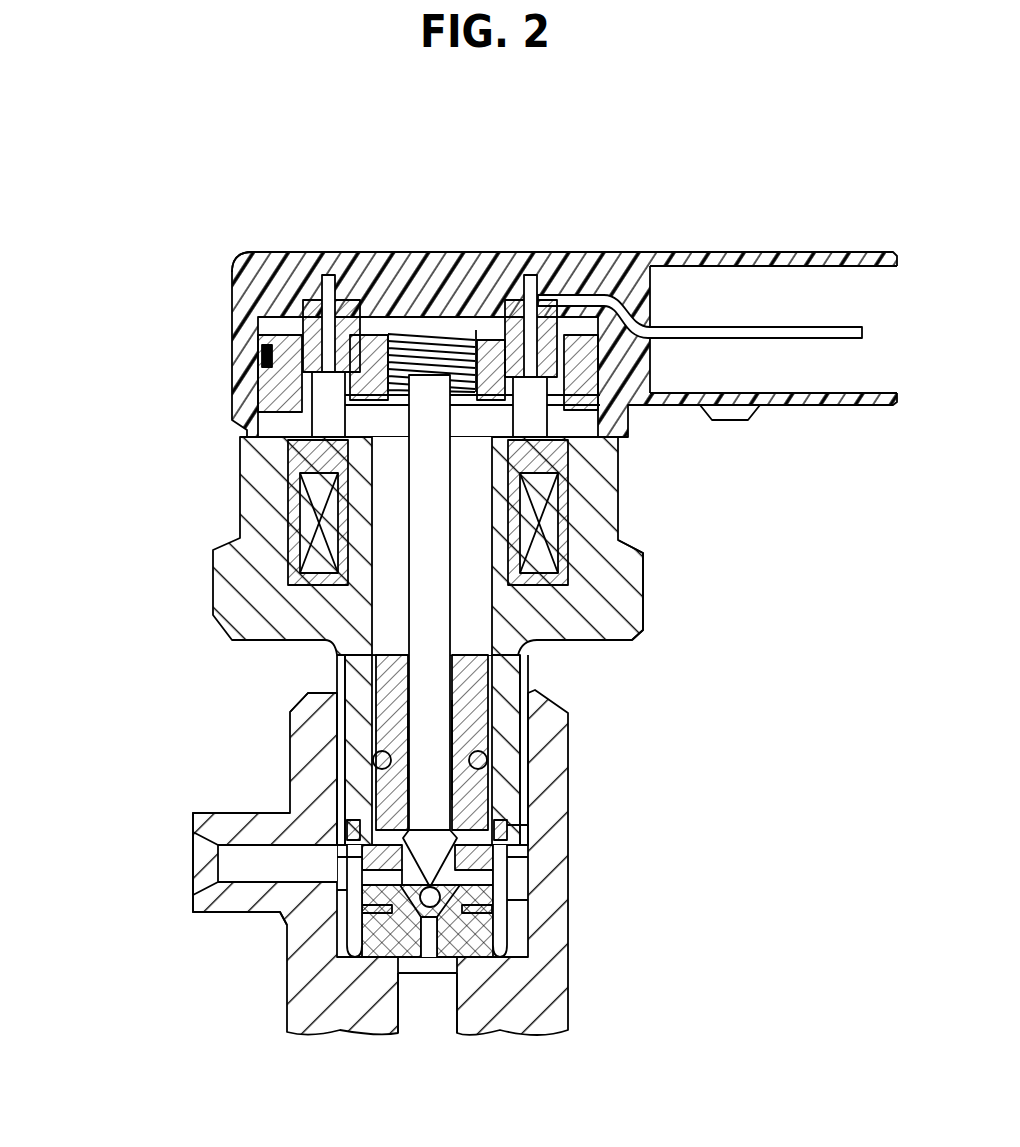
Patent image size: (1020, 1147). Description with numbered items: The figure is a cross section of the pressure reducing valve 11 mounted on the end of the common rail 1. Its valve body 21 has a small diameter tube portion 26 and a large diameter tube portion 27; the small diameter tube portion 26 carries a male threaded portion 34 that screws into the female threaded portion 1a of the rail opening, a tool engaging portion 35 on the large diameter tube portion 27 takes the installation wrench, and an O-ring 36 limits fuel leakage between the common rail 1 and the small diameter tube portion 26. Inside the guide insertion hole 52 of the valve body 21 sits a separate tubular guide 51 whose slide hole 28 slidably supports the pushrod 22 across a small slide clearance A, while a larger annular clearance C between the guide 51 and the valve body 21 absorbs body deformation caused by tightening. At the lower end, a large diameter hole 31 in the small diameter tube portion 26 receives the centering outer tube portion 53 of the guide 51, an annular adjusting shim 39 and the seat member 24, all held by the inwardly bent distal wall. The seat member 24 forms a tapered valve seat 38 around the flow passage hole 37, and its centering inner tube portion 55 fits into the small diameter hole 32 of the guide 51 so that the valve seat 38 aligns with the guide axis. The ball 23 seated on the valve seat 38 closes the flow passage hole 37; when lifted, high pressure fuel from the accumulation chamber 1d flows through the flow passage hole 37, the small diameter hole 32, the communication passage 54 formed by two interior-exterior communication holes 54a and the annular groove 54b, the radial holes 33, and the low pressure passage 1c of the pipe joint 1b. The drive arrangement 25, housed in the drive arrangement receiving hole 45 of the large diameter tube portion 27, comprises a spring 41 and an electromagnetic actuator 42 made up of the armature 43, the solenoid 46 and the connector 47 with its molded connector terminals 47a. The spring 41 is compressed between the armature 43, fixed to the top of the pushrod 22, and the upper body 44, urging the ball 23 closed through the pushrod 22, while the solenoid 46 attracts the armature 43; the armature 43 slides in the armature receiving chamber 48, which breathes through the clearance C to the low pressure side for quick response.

The common rail 1 is at (345, 896).
The female threaded portion 1a is at (357, 770).
The pipe joint 1b is at (228, 827).
The low pressure passage 1c is at (230, 863).
The accumulation chamber 1d is at (427, 1017).
The pressure reducing valve 11 is at (207, 219).
The valve body 21 is at (417, 641).
The pushrod 22 is at (440, 680).
The ball 23 is at (431, 907).
The seat member 24 is at (497, 958).
The drive arrangement 25 is at (463, 376).
The small diameter tube portion 26 is at (337, 713).
The large diameter tube portion 27 is at (242, 506).
The slide hole 28 is at (480, 802).
The large diameter hole 31 is at (513, 928).
The small diameter hole 32 is at (497, 875).
The radial holes 33 is at (357, 885).
The male threaded portion 34 is at (340, 727).
The tool engaging portion 35 is at (633, 585).
The O-ring 36 is at (497, 833).
The flow passage hole 37 is at (380, 990).
The valve seat 38 is at (385, 965).
The adjusting shim 39 is at (490, 930).
The spring 41 is at (232, 330).
The electromagnetic actuator 42 is at (403, 391).
The armature 43 is at (262, 404).
The upper body 44 is at (497, 305).
The drive arrangement receiving hole 45 is at (548, 310).
The solenoid 46 is at (300, 483).
The connector 47 is at (719, 294).
The connector terminals 47a is at (845, 327).
The armature receiving chamber 48 is at (590, 413).
The guide 51 is at (470, 748).
The guide insertion hole 52 is at (480, 765).
The centering outer tube portion 53 is at (497, 888).
The communication passage 54 is at (390, 906).
The interior-exterior communication holes 54a is at (375, 910).
The annular groove 54b is at (220, 915).
The centering inner tube portion 55 is at (350, 940).
The slide clearance A is at (385, 693).
The clearance C is at (475, 722).